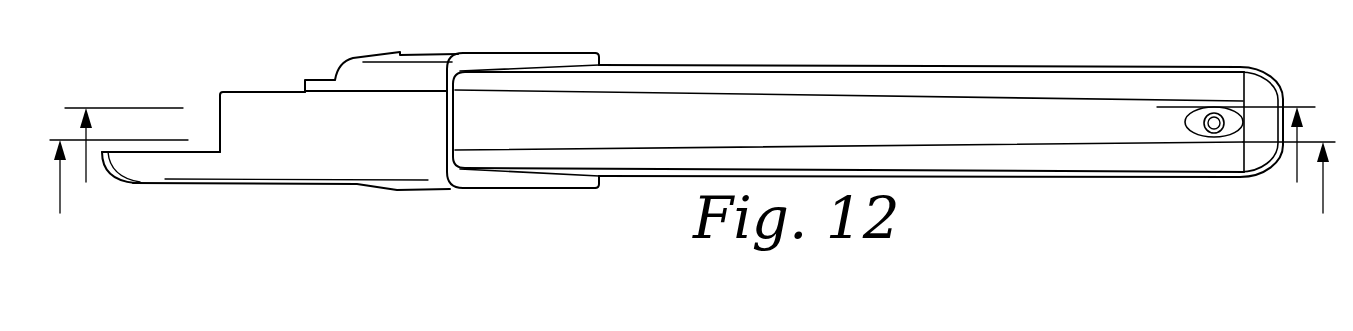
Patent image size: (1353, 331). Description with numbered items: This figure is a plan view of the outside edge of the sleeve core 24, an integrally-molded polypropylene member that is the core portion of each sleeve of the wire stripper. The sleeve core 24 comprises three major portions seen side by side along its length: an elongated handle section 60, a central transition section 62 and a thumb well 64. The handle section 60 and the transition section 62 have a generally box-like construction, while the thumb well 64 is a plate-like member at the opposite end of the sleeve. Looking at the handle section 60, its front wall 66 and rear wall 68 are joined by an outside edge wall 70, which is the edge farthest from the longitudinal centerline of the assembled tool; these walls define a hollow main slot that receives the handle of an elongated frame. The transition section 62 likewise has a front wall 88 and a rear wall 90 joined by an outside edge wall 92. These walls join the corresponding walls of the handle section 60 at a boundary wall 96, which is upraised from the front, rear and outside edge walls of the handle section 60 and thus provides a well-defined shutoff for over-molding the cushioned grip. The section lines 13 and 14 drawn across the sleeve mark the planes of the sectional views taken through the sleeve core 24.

The section line 13- 13 is at (690, 158).
The section line 14- 14 is at (692, 190).
The sleeve core 24 is at (868, 134).
The handle section 60 is at (988, 183).
The transition section 62 is at (423, 199).
The thumb well 64 is at (125, 190).
The front wall 66 is at (922, 180).
The rear wall 68 is at (1022, 65).
The outside edge wall 70 is at (948, 125).
The front wall 88 is at (452, 186).
The rear wall 90 is at (433, 57).
The outside edge wall 92 is at (274, 135).
The boundary wall 96 is at (513, 65).